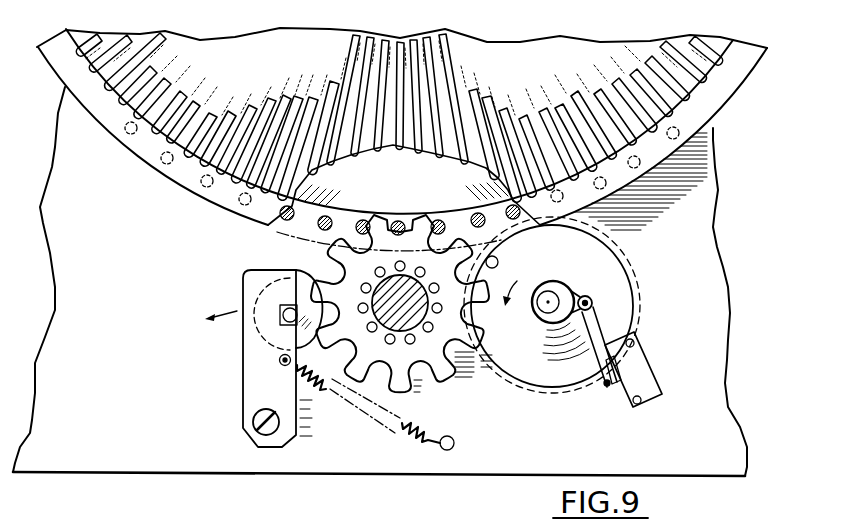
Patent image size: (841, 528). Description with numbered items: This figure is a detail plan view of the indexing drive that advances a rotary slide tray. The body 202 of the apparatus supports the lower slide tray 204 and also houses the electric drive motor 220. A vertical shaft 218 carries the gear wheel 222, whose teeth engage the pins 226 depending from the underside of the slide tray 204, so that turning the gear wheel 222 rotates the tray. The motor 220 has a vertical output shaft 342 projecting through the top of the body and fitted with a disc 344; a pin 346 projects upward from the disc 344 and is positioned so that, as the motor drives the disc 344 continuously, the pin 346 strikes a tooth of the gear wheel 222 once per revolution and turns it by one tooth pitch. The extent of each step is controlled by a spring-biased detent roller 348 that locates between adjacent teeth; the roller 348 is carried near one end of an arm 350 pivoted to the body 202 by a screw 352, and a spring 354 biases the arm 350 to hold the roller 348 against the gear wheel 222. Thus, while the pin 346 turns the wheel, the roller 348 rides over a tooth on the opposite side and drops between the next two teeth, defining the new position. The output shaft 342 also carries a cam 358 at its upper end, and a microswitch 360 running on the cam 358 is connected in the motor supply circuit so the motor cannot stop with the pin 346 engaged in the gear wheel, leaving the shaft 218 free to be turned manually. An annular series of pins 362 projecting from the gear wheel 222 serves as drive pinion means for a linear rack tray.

The body 202 is at (658, 455).
The lower slide tray 204 is at (742, 99).
The shaft 218 is at (340, 277).
The electric drive motor 220 is at (641, 284).
The gear wheel 222 is at (447, 383).
The pins 226 is at (435, 217).
The output shaft 342 is at (548, 298).
The disc 344 is at (633, 272).
The pin 346 is at (498, 261).
The detent roller 348 is at (282, 292).
The arm 350 is at (245, 367).
The screw 352 is at (253, 412).
The spring 354 is at (402, 438).
The cam 358 is at (562, 333).
The microswitch 360 is at (643, 366).
The pins 362 is at (402, 344).